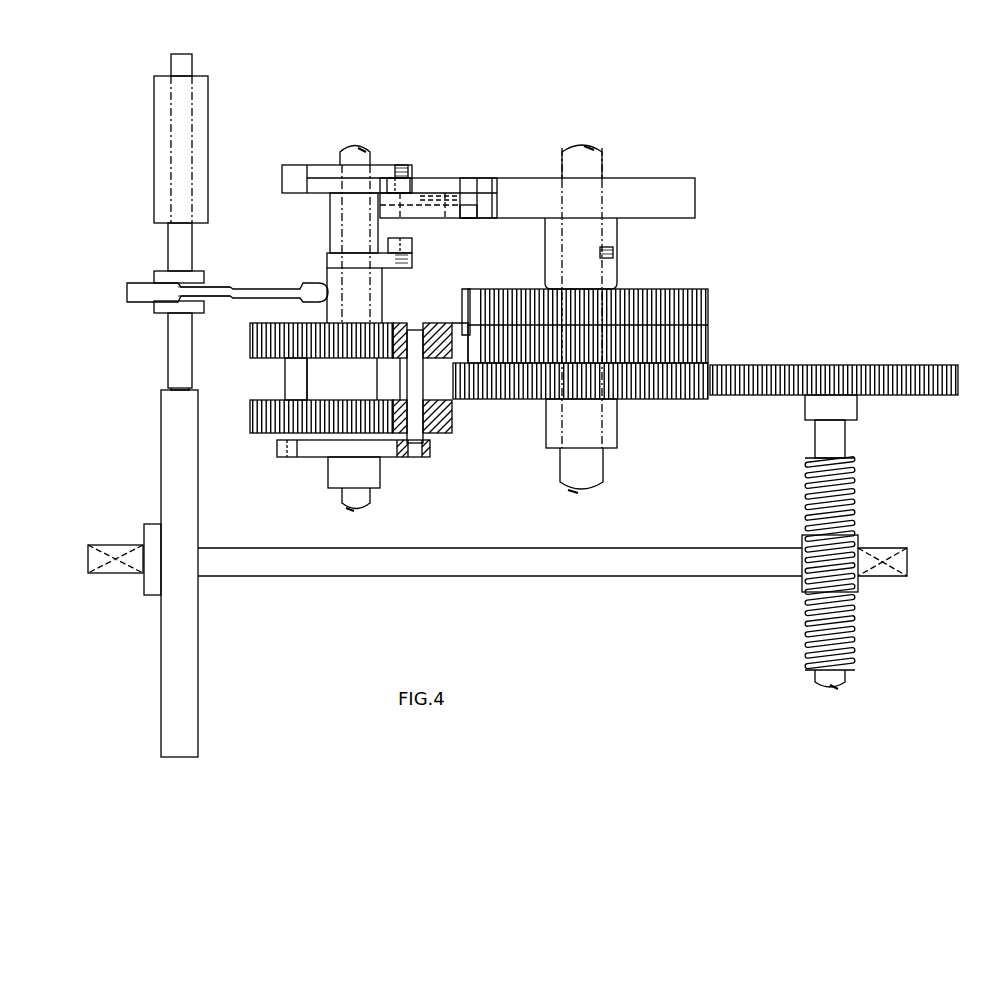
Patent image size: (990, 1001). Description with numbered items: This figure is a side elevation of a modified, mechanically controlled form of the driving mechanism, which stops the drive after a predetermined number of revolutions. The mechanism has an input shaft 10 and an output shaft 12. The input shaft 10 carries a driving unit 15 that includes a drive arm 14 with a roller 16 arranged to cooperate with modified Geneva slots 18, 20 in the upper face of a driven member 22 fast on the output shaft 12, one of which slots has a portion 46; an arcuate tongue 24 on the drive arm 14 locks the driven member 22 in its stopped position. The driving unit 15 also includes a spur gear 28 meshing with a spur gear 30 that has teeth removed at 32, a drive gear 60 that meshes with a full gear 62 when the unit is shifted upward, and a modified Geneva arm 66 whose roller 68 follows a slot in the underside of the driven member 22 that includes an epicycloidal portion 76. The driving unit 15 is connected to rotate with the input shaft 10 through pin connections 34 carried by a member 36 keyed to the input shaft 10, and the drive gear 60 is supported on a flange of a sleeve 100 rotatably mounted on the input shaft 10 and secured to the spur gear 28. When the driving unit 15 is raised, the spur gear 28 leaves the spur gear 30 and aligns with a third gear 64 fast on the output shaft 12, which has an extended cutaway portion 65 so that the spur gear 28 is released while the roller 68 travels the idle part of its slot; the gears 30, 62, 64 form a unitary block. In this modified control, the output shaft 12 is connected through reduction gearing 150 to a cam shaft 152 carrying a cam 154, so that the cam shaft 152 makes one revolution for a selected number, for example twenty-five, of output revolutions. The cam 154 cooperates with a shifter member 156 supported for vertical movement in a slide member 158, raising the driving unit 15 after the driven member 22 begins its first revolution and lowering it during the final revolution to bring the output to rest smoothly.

The input shaft 10 is at (338, 160).
The output shaft 12 is at (603, 168).
The drive arm 14 is at (401, 170).
The driving unit 15 is at (306, 227).
The roller 16 is at (405, 186).
The modified Geneva slot 18 is at (447, 192).
The modified Geneva slot 20 is at (471, 164).
The driven member 22 is at (673, 184).
The arcuate tongue 24 is at (295, 168).
The spur gear 28 is at (442, 323).
The spur gear 30 is at (604, 346).
The removed teeth portion 32 is at (468, 330).
The pin connections 34 is at (288, 380).
The keyed member 36 is at (425, 460).
The slot portion 46 is at (481, 182).
The drive gear 60 is at (440, 433).
The full gear 62 is at (677, 400).
The third gear 64 is at (673, 289).
The cutaway portion 65 is at (462, 300).
The modified Geneva arm 66 is at (412, 265).
The roller 68 is at (412, 248).
The slot portion 76 is at (467, 218).
The sleeve 100 is at (330, 395).
The reduction gearing 150 is at (876, 469).
The cam shaft 152 is at (548, 567).
The cam 154 is at (193, 651).
The shifter member 156 is at (263, 292).
The slide member 158 is at (162, 103).